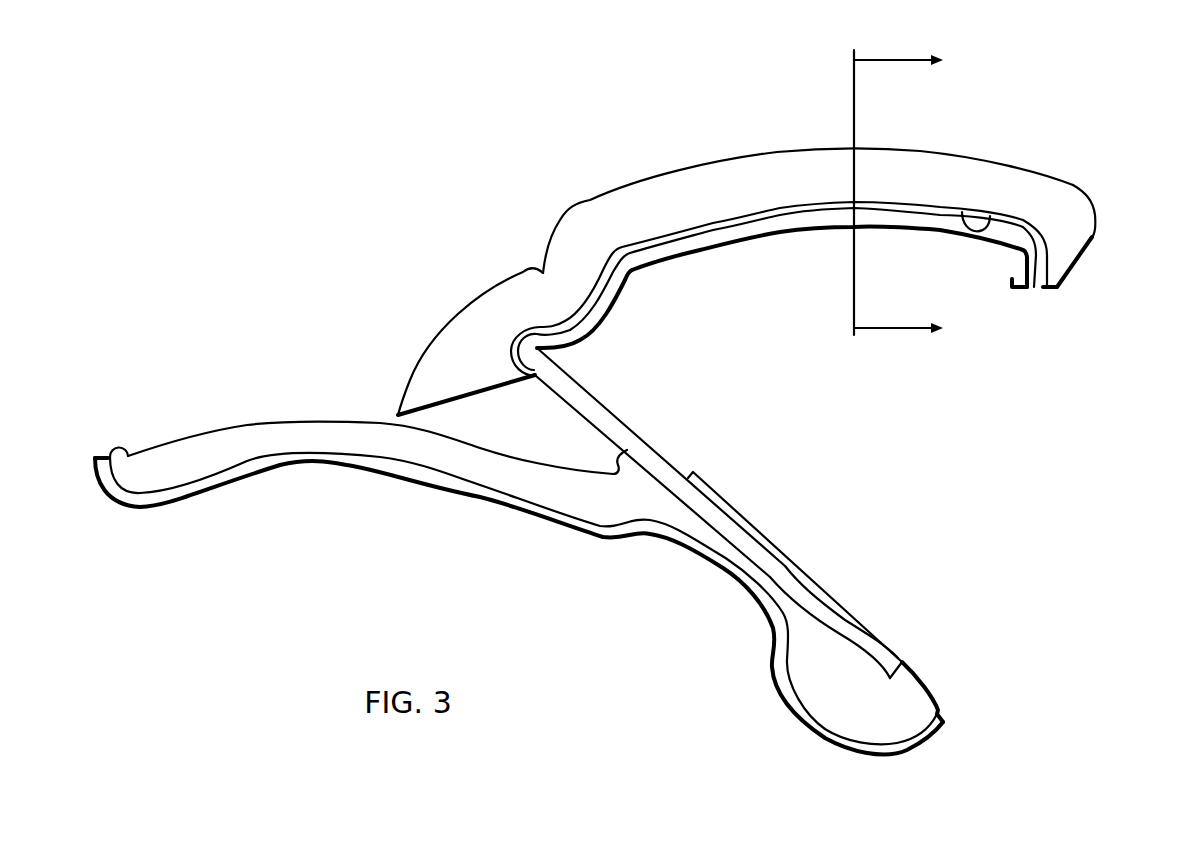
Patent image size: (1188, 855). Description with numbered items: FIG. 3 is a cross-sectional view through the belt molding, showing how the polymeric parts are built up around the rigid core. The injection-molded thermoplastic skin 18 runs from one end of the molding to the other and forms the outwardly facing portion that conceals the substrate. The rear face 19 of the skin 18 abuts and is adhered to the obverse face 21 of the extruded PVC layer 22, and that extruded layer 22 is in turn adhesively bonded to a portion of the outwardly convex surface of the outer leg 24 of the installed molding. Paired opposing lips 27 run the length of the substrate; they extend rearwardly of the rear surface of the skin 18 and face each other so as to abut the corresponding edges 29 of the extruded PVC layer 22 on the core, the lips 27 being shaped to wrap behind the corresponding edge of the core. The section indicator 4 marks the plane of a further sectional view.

The thermoplastic skin 18 is at (645, 202).
The rear face 19 is at (995, 222).
The obverse face 21 is at (1030, 223).
The extruded PVC layer 22 is at (1035, 292).
The outer leg 24 is at (600, 307).
The lips 27 is at (1065, 252).
The edges 29 is at (1022, 275).
The section line 4- 4 is at (910, 196).